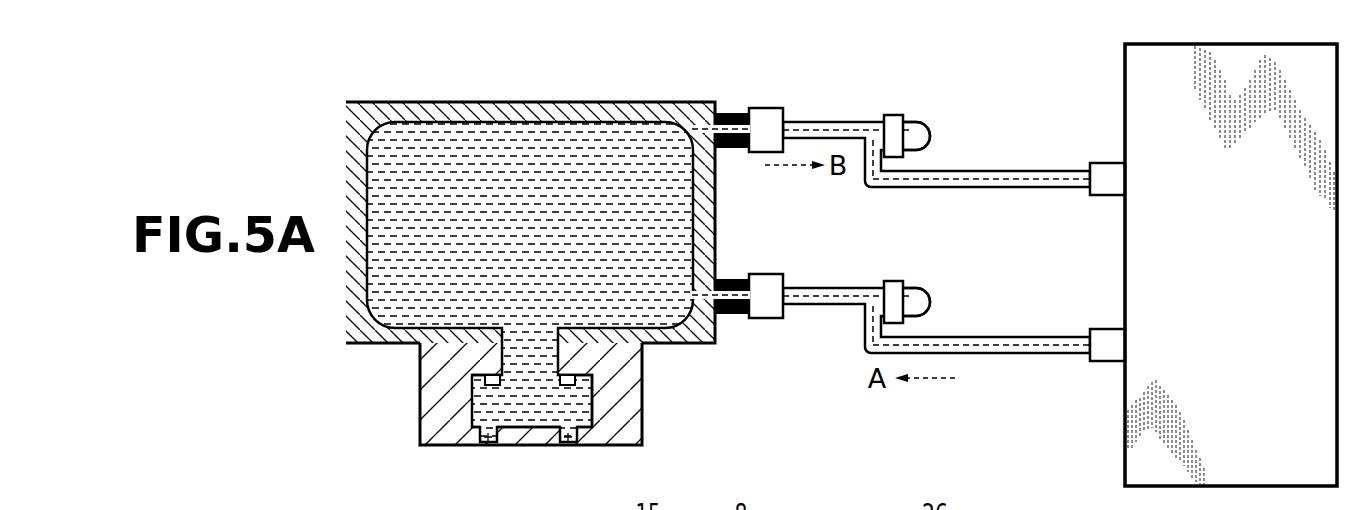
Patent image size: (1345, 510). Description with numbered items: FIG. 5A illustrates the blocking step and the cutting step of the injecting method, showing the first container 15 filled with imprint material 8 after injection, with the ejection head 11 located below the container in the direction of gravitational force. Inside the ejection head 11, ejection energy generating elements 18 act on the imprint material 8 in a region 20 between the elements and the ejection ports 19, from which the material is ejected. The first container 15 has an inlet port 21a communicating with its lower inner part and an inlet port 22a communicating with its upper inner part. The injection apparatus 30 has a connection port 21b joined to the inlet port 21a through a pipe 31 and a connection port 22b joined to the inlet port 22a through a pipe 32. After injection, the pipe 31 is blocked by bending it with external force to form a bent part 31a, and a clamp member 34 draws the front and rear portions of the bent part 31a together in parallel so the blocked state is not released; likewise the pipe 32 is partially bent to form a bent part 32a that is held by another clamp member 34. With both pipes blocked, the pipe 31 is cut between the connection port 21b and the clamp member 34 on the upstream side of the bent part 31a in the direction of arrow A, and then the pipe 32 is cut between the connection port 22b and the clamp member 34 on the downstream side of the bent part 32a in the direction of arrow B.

The imprint material 8 is at (540, 160).
The ejection head 11 is at (425, 383).
The first container 15 is at (454, 112).
The ejection energy generating elements 18 is at (568, 375).
The ejection ports 19 is at (492, 447).
The region 20 is at (578, 412).
The inlet port 21a is at (764, 274).
The connection port 21b is at (1100, 329).
The inlet port 22a is at (764, 108).
The connection port 22b is at (1100, 163).
The injection apparatus 30 is at (1106, 61).
The pipe 31 is at (827, 288).
The bent part 31a is at (933, 304).
The pipe 32 is at (827, 122).
The bent part 32a is at (933, 138).
The clamp member 34 is at (893, 115).